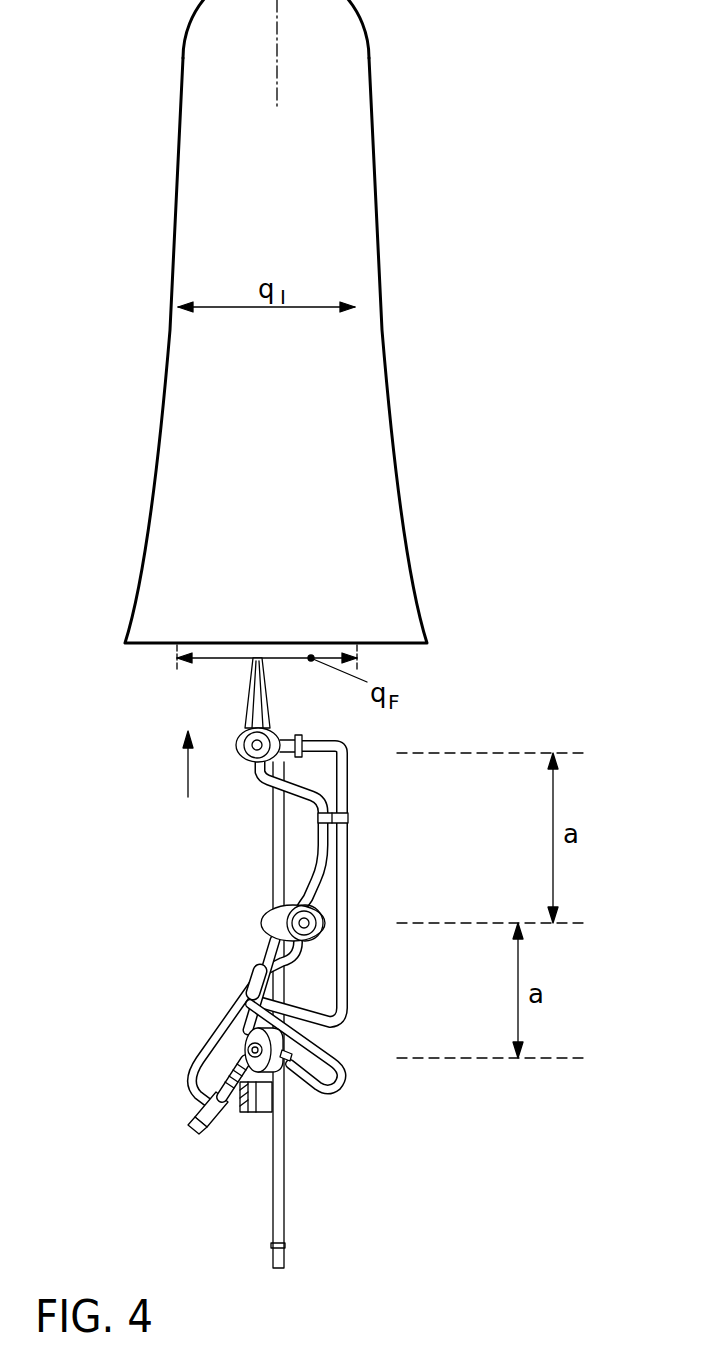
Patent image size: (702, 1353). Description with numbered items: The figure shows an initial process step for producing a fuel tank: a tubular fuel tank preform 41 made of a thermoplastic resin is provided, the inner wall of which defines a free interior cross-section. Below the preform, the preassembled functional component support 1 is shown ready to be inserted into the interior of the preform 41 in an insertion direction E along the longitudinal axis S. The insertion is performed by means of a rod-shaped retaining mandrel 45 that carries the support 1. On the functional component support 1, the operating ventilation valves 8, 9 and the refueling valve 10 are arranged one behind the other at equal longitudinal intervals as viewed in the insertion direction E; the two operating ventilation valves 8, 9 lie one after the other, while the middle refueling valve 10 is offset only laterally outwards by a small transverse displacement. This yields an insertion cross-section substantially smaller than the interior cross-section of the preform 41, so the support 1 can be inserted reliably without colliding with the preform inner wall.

The functional component support 1 is at (325, 867).
The operating ventilation valve 8 is at (292, 725).
The operating ventilation valve 9 is at (247, 1050).
The refueling valve 10 is at (246, 919).
The fuel tank preform 41 is at (366, 96).
The retaining mandrel 45 is at (281, 1163).
The longitudinal axis S is at (277, 84).
The insertion direction E is at (175, 764).